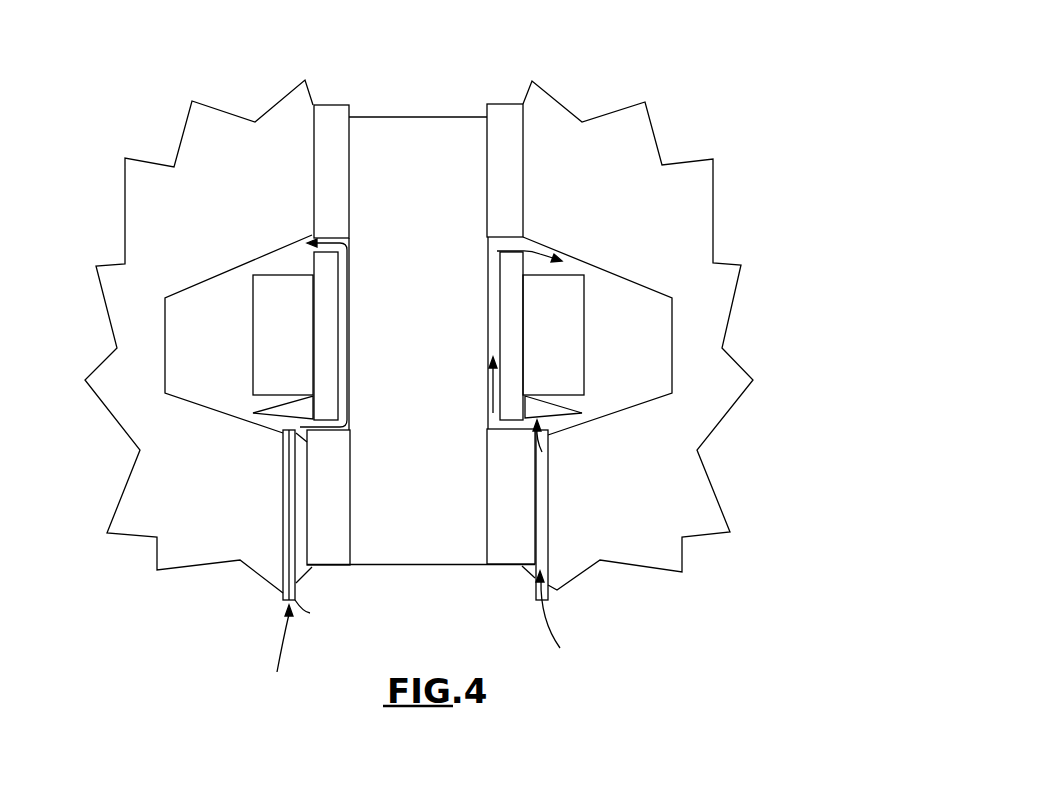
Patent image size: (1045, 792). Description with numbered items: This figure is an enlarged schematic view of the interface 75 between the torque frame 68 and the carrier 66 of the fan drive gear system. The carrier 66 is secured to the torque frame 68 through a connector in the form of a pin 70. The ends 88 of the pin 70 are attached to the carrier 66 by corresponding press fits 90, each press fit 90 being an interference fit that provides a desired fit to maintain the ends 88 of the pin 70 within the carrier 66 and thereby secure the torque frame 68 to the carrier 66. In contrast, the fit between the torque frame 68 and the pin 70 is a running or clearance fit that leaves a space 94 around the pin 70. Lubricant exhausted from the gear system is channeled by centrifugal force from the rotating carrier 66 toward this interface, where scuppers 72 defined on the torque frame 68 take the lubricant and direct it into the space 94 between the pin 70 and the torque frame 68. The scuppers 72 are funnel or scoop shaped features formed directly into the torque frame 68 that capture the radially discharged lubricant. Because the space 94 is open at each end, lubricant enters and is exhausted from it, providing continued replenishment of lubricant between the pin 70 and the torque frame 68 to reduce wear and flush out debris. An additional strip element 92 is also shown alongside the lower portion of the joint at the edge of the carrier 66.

The heat exchanger assembly 75 is at (750, 51).
The carrier 66 is at (695, 495).
The torque frame 68 is at (560, 323).
The pin 70 is at (455, 225).
The scuppers 72 is at (290, 412).
The ends of the pin 88 is at (474, 110).
The press fit 90 is at (352, 141).
The gasket strip 92 is at (278, 489).
The space 94 is at (493, 332).